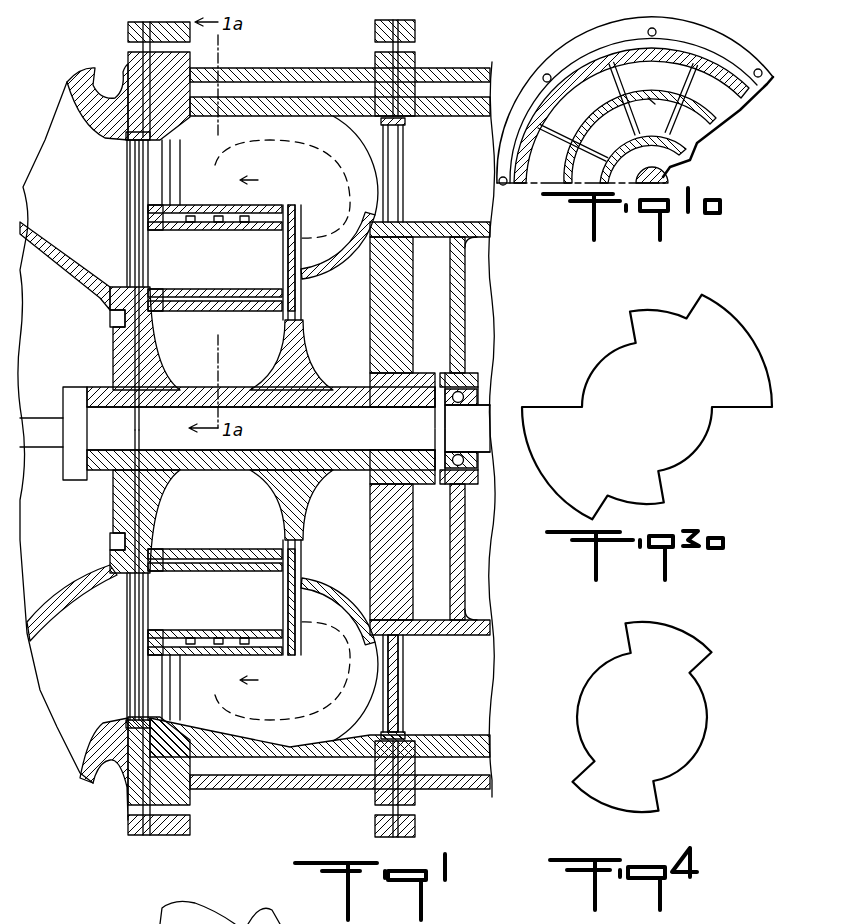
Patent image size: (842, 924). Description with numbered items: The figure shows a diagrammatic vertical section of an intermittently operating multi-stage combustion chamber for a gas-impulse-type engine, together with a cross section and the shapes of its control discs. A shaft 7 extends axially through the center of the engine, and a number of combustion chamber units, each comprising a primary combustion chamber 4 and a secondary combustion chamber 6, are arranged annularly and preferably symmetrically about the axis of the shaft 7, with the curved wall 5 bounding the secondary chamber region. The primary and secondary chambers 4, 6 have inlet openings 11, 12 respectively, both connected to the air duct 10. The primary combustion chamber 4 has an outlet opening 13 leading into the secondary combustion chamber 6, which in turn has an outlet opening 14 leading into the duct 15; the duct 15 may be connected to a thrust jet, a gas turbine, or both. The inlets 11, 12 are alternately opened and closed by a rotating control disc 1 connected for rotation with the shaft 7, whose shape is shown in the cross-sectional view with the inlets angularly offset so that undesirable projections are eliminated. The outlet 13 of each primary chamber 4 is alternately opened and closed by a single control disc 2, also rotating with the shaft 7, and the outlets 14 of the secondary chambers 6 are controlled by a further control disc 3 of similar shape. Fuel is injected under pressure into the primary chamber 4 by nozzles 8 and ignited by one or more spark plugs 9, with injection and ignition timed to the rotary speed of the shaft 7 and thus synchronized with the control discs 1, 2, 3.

In FIG. 1, the control disc 1 is at (143, 257).
In FIG. 3A, the control disc 1 is at (664, 395).
In FIG. 1, the control disc 2 is at (300, 356).
In FIG. 4, the control disc 2 is at (647, 709).
In FIG. 1, the control disc 3 is at (395, 213).
In FIG. 1, the primary combustion chamber 4 is at (216, 280).
In FIG. 1A, the primary combustion chamber 4 is at (618, 111).
In FIG. 1, the curved shroud wall 5 is at (333, 222).
In FIG. 1, the secondary combustion chamber 6 is at (274, 136).
In FIG. 1A, the secondary combustion chamber 6 is at (644, 126).
In FIG. 1, the shaft 7 is at (470, 438).
In FIG. 1, the nozzles 8 is at (214, 223).
In FIG. 1A, the nozzles 8 is at (652, 100).
In FIG. 1, the spark plugs 9 is at (243, 223).
In FIG. 1, the air duct 10 is at (88, 195).
In FIG. 1, the inlet opening 11 is at (147, 283).
In FIG. 1, the inlet opening 12 is at (177, 165).
In FIG. 1, the outlet opening 13 is at (290, 260).
In FIG. 1, the outlet opening 14 is at (386, 148).
In FIG. 1, the duct 15 is at (467, 173).